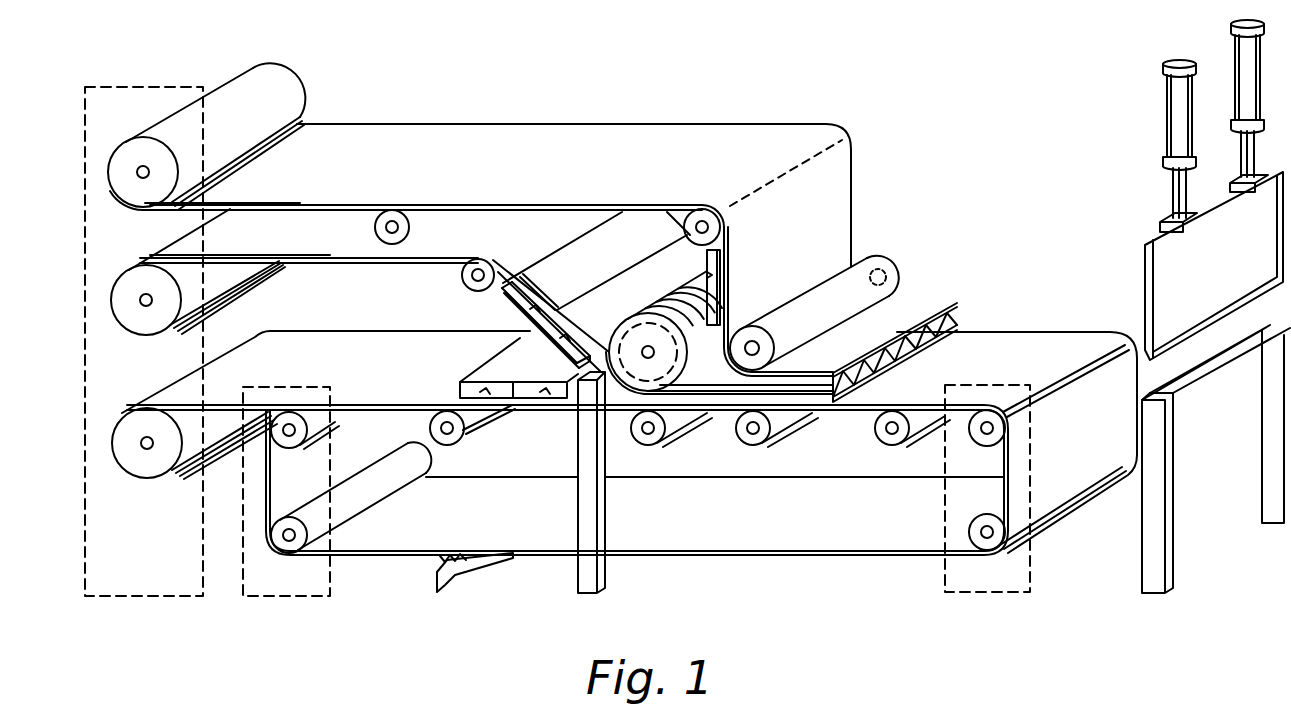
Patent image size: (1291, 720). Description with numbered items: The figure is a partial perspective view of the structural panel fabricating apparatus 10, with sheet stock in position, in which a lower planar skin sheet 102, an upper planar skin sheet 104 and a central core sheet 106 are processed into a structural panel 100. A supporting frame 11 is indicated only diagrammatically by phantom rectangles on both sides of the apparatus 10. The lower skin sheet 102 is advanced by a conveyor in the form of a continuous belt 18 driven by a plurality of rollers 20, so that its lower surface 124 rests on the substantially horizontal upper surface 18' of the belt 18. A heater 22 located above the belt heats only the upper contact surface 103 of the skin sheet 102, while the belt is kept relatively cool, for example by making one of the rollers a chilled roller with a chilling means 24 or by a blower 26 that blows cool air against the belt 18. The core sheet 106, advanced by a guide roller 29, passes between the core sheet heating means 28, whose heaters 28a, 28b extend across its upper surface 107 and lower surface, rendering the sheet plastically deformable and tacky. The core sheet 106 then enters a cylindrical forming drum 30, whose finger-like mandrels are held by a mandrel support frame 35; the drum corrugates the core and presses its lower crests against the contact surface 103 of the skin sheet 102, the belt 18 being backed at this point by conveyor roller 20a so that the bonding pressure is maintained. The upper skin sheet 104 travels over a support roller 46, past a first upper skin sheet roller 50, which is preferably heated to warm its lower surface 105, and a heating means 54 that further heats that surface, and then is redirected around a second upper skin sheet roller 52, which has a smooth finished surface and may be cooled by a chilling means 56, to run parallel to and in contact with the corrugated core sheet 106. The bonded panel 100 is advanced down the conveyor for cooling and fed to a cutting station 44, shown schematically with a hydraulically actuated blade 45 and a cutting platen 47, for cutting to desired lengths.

The structural panel fabricating apparatus 10 is at (397, 608).
The supporting frame 11 is at (158, 588).
The continuous belt 18 is at (697, 467).
The upper surface of belt 18' is at (1072, 418).
The rollers 20 is at (764, 440).
The conveyor roller 20a is at (640, 440).
The heater 22 is at (495, 366).
The chilling means 24 is at (455, 440).
The blower 26 is at (468, 582).
The core sheet heating means 28 is at (588, 229).
The heater 28a is at (555, 264).
The heater 28b is at (515, 305).
The guide roller 29 is at (462, 275).
The cylindrical forming drum 30 is at (693, 380).
The mandrel support frame 35 is at (583, 505).
The cutting station 44 is at (1143, 63).
The hydraulically actuated blade 45 is at (1240, 277).
The support roller 46 is at (389, 210).
The cutting platen 47 is at (1158, 510).
The first upper skin sheet roller 50 is at (702, 205).
The second upper skin sheet roller 52 is at (893, 307).
The heating means 54 is at (707, 262).
The chilling means 56 is at (887, 267).
The structural panel 100 is at (948, 293).
The lower planar skin sheet 102 is at (307, 340).
The upper contact surface 103 is at (408, 340).
The upper planar skin sheet 104 is at (468, 128).
The lower surface 105 is at (270, 212).
The central core sheet 106 is at (331, 263).
The upper surface 107 is at (312, 253).
The lower surface 124 is at (222, 410).